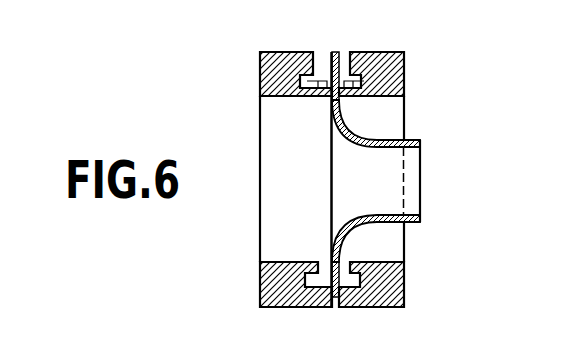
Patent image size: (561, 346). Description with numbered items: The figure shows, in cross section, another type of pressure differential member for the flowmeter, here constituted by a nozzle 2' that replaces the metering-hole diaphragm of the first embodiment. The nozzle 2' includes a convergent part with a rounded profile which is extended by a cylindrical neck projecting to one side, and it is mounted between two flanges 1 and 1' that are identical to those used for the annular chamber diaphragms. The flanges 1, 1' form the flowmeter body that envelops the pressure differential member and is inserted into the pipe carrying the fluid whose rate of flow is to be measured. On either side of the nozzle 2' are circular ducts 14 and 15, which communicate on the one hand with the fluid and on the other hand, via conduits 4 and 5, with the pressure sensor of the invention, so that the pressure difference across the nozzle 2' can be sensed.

The flange 1 is at (296, 156).
The flange 1' is at (371, 156).
The conduit 4 is at (315, 51).
The conduit 5 is at (346, 51).
The circular duct 14 is at (305, 100).
The circular duct 15 is at (363, 100).
The nozzle 2' is at (398, 181).